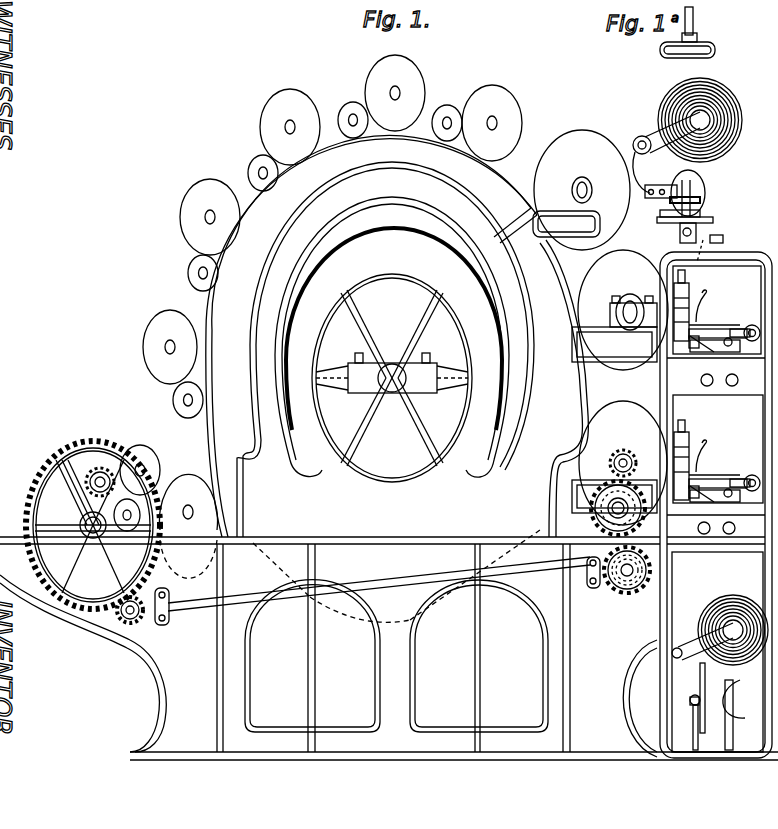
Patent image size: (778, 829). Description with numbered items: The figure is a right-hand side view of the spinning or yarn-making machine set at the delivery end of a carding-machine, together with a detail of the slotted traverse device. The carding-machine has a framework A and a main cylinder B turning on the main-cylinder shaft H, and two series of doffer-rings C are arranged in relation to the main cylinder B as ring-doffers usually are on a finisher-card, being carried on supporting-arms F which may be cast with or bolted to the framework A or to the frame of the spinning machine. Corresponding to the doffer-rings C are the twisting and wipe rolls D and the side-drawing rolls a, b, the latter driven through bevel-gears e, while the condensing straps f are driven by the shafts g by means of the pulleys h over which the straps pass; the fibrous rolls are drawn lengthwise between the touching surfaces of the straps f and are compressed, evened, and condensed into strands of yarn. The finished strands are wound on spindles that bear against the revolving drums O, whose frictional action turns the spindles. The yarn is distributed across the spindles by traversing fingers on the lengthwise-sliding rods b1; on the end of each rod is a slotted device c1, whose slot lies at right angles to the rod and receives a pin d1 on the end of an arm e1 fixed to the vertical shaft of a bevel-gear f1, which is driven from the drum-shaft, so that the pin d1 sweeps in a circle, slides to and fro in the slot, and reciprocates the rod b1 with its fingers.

In FIG. 1, the framework of the carding-machine A is at (389, 648).
In FIG. 1, the main cylinder B is at (397, 336).
In FIG. 1, the main-cylinder shaft H is at (392, 378).
In FIG. 1, the doffer-rings C is at (600, 327).
In FIG. 1, the supporting-arms F is at (614, 420).
In FIG. 1, the revolving drums O is at (683, 178).
In FIG. 1, the side-drawing roll a is at (692, 272).
In FIG. 1, the side-drawing roll b is at (686, 320).
In FIG. 1, the twisting and wipe rolls D is at (712, 322).
In FIG. 1, the pulleys h is at (738, 328).
In FIG. 1, the bevel-gears e is at (750, 325).
In FIG. 1, the condensing straps f is at (705, 350).
In FIG. 1, the shafts g is at (726, 347).
In FIG. 1, the lengthwise-sliding rods b1 is at (700, 232).
In FIG. 1a, the lengthwise-sliding rods b1 is at (693, 26).
In FIG. 1, the slotted device c1 is at (690, 731).
In FIG. 1a, the slotted device c1 is at (715, 47).
In FIG. 1, the pin d1 is at (658, 220).
In FIG. 1, the arm e1 is at (686, 714).
In FIG. 1, the bevel-gear f1 is at (700, 200).